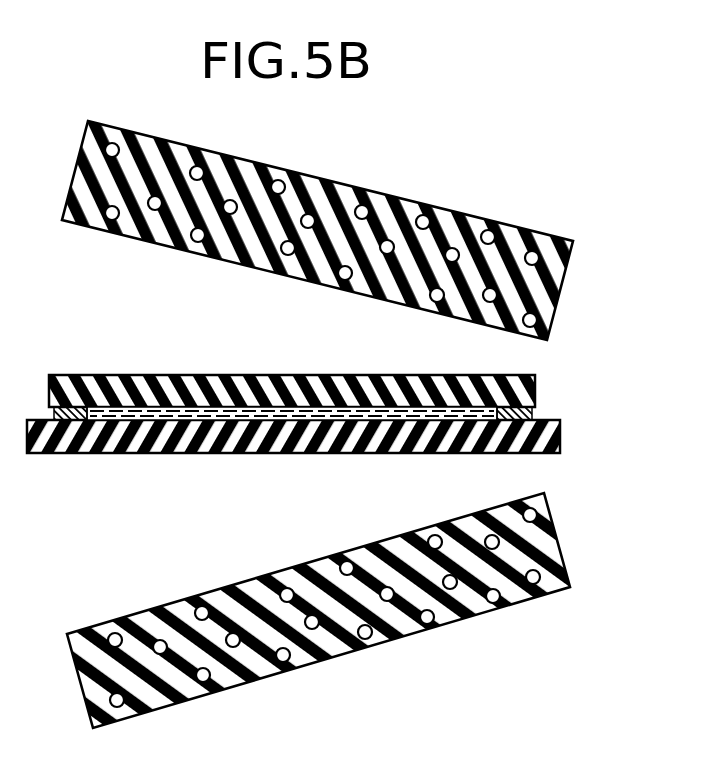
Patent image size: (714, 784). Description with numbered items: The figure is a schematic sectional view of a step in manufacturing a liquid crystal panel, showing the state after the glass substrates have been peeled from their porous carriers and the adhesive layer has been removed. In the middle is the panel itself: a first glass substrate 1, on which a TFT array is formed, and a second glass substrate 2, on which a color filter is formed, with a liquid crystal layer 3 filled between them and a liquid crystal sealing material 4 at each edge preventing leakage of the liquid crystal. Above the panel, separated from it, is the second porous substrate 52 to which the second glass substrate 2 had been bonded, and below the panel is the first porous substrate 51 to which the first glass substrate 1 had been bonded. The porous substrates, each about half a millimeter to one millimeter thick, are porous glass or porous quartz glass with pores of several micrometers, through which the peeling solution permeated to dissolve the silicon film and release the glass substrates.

The first glass substrate 1 is at (217, 453).
The second glass substrate 2 is at (196, 375).
The liquid crystal layer 3 is at (297, 420).
The liquid crystal sealing material 4 is at (74, 421).
The first porous substrate 51 is at (558, 521).
The second porous substrate 52 is at (563, 283).